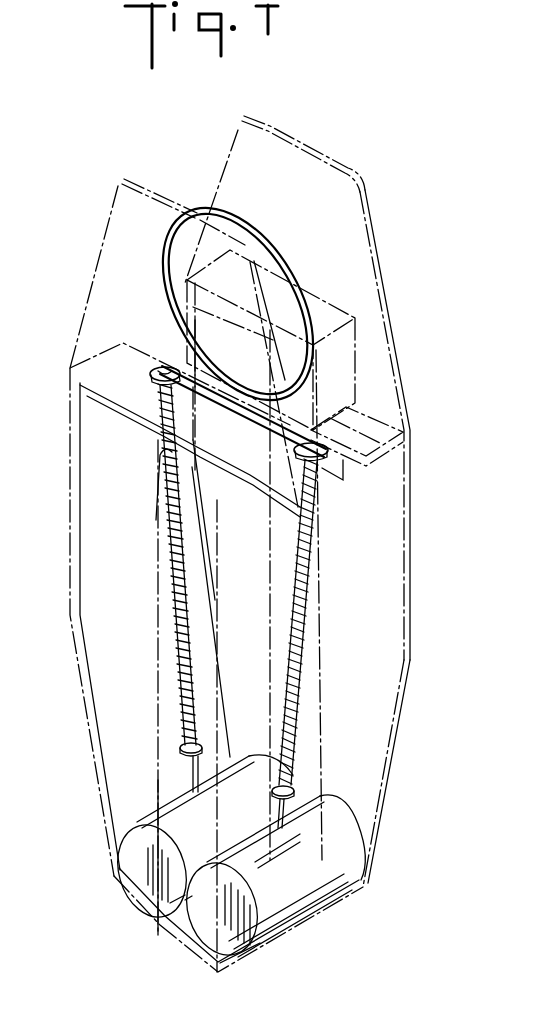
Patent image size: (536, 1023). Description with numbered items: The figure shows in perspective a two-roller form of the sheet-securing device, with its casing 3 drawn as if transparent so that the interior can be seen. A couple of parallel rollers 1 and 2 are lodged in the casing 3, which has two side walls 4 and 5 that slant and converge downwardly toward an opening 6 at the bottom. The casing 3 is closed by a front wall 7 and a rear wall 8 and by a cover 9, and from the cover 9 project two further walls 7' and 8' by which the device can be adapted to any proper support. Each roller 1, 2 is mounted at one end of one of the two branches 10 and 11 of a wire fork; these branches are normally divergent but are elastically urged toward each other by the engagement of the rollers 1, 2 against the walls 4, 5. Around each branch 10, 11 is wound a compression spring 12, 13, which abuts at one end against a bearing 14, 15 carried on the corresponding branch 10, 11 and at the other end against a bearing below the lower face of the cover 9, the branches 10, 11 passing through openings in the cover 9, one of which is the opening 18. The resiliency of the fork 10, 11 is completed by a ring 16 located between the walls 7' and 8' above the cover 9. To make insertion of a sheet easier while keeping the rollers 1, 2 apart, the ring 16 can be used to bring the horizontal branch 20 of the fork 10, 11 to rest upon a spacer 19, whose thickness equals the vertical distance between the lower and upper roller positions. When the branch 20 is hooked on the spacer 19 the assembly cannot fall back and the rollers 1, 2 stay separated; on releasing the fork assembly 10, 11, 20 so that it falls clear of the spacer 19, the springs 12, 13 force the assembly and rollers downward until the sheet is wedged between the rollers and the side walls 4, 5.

The roller 1 is at (160, 913).
The roller 2 is at (210, 923).
The casing 3 is at (66, 480).
The side wall 4 is at (90, 431).
The side wall 5 is at (396, 525).
The opening 6 is at (170, 944).
The front wall 7 is at (195, 670).
The wall 7' is at (133, 232).
The rear wall 8 is at (417, 732).
The wall 8' is at (274, 181).
The cover 9 is at (373, 443).
The branch of wire fork 10 is at (193, 770).
The branch of wire fork 11 is at (290, 820).
The compression spring 12 is at (180, 608).
The compression spring 13 is at (305, 648).
The bearing 14 is at (180, 747).
The bearing 15 is at (300, 788).
The ring 16 is at (247, 228).
The opening of cover 18 is at (150, 373).
The spacer 19 is at (343, 343).
The horizontal branch of fork 20 is at (258, 415).